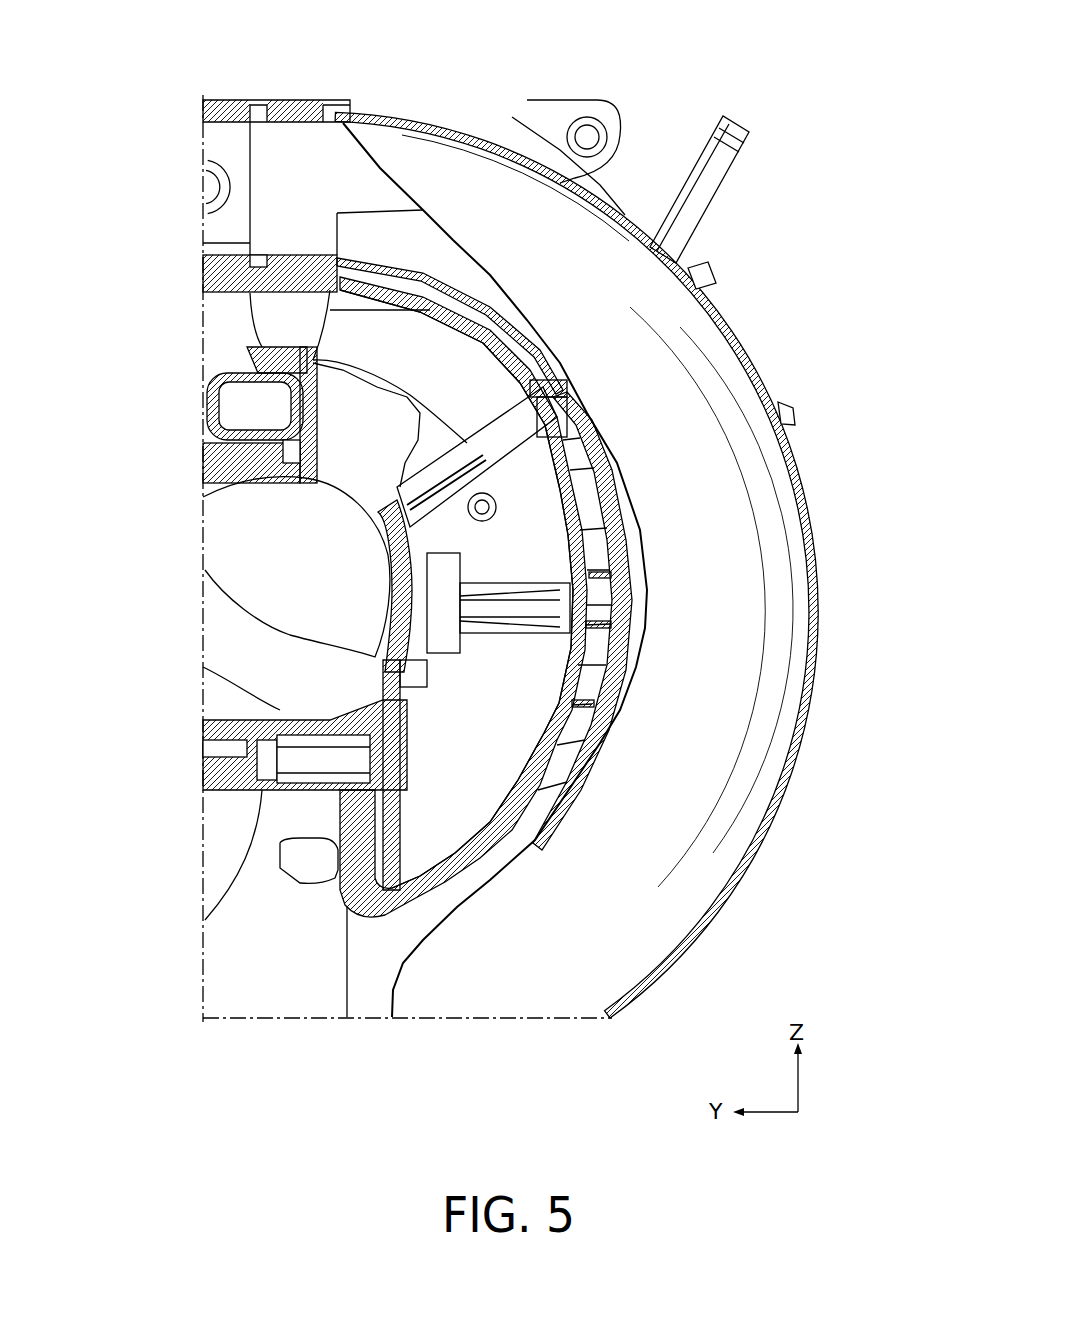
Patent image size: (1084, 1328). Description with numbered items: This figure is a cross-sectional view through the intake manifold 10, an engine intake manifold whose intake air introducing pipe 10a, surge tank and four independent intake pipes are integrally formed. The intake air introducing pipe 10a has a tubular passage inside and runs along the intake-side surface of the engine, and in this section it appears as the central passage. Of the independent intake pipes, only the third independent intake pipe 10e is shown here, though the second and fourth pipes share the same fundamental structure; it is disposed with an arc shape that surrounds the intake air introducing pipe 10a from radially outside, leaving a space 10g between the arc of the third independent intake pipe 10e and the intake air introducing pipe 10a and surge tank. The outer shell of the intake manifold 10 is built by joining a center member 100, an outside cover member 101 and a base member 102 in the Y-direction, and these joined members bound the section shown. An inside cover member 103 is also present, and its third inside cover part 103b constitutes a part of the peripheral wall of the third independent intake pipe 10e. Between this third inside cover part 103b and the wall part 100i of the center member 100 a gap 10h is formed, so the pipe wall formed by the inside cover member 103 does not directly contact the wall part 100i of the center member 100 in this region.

The intake manifold 10 is at (823, 116).
The intake air introducing pipe 10a is at (283, 607).
The third independent intake pipe 10e is at (665, 385).
The space 10g is at (436, 713).
The gap 10h is at (607, 503).
The center member 100 is at (367, 915).
The wall part 100i is at (553, 503).
The outside cover member 101 is at (722, 909).
The base member 102 is at (203, 768).
The inside cover member 103 is at (410, 240).
The third inside cover part 103b is at (640, 541).